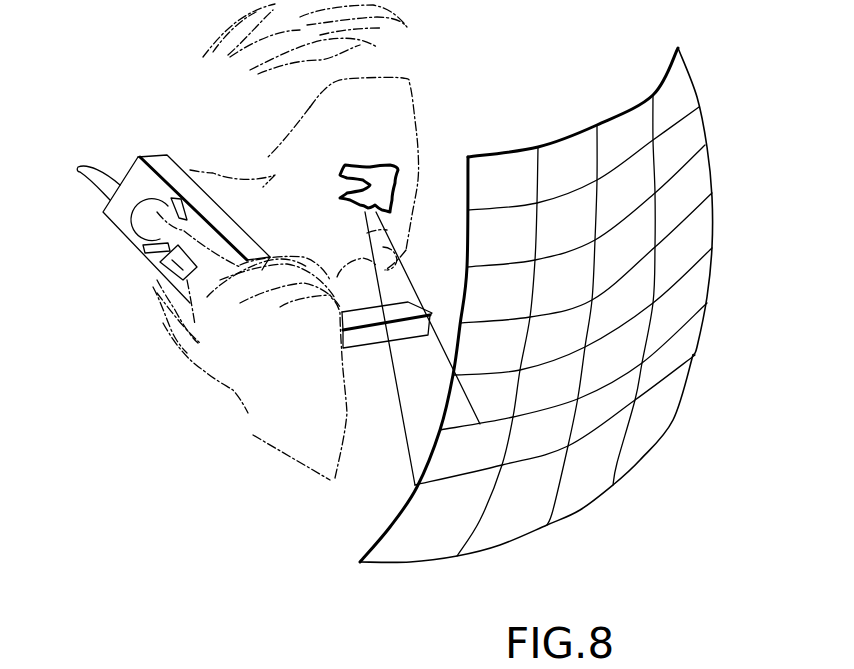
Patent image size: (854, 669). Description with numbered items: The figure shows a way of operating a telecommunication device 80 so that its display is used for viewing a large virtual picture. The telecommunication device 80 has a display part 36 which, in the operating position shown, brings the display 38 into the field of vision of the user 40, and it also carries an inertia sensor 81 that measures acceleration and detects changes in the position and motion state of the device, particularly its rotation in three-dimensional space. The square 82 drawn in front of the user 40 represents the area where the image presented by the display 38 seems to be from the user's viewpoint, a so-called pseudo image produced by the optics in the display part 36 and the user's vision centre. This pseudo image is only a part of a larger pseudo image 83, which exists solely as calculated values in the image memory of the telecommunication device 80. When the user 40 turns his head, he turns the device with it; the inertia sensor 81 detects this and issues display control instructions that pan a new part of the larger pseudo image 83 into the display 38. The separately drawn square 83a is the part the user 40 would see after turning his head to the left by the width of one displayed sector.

The user 40 is at (422, 53).
The display 38 is at (383, 300).
The square 82 is at (433, 470).
The display part 36 is at (425, 305).
The telecommunication device 80 is at (118, 234).
The inertia sensor 81 is at (162, 272).
The larger pseudo image 83 is at (564, 304).
The square seen by the user after turning left 83a is at (557, 427).